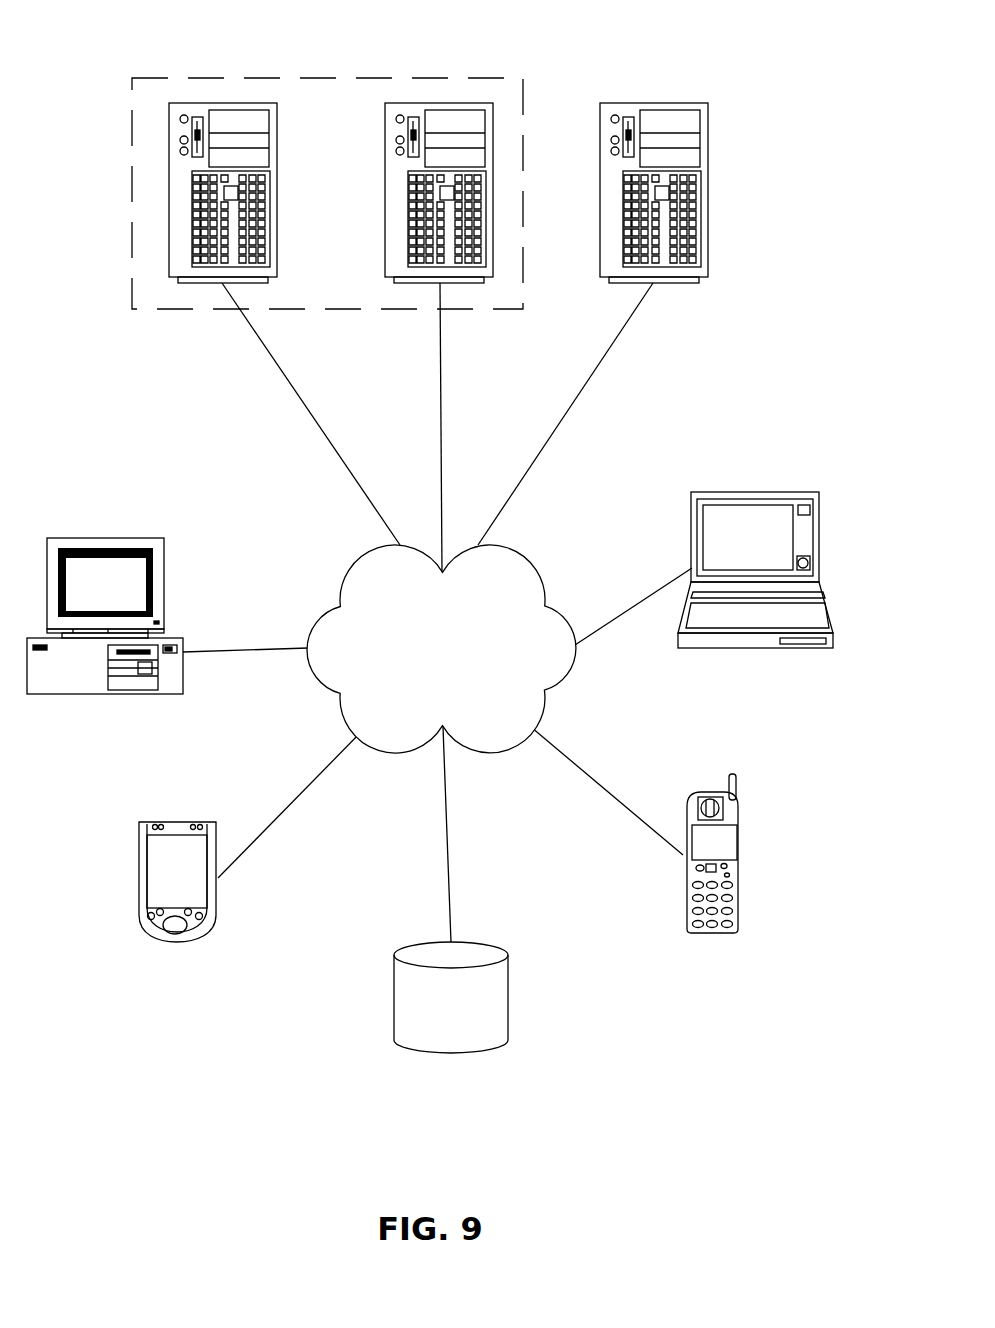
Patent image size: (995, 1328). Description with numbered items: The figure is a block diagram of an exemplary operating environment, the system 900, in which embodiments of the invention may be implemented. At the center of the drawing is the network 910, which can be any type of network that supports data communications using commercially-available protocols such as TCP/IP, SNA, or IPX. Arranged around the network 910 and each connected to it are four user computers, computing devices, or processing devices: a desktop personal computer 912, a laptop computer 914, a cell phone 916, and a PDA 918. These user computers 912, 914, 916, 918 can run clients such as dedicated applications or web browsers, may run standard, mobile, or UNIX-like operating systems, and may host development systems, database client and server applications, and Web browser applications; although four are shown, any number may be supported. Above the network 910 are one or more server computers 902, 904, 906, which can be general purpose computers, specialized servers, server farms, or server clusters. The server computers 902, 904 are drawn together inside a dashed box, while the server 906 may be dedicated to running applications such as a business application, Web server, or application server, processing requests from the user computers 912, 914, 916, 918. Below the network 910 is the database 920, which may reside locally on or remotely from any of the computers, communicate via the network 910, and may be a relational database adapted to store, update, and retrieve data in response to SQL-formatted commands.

The system 900 is at (803, 105).
The server computer 902 is at (203, 103).
The server computer 904 is at (436, 103).
The server computer 906 is at (708, 188).
The network 910 is at (424, 696).
The user computer 912 is at (102, 538).
The user computer 914 is at (752, 492).
The user computer 916 is at (710, 933).
The user computer 918 is at (178, 943).
The database 920 is at (433, 1044).